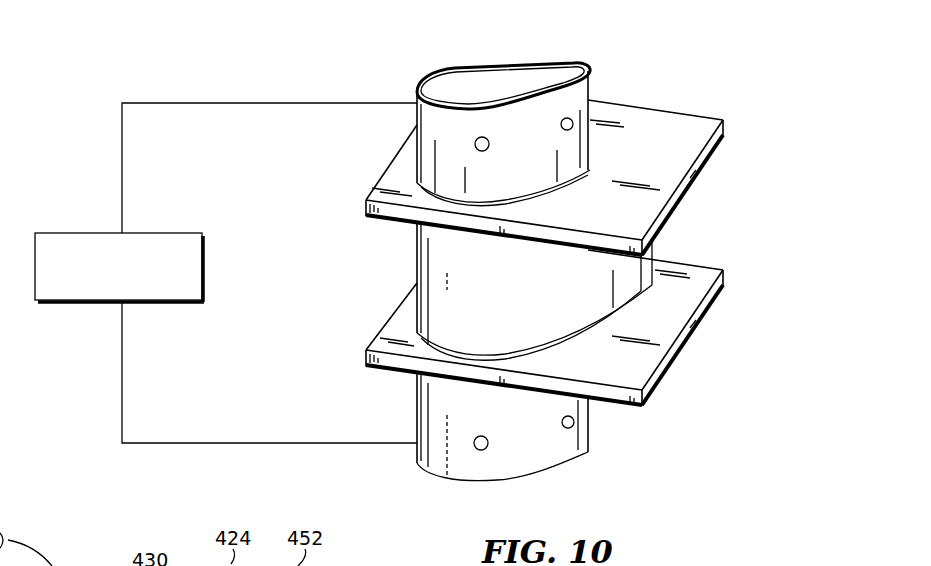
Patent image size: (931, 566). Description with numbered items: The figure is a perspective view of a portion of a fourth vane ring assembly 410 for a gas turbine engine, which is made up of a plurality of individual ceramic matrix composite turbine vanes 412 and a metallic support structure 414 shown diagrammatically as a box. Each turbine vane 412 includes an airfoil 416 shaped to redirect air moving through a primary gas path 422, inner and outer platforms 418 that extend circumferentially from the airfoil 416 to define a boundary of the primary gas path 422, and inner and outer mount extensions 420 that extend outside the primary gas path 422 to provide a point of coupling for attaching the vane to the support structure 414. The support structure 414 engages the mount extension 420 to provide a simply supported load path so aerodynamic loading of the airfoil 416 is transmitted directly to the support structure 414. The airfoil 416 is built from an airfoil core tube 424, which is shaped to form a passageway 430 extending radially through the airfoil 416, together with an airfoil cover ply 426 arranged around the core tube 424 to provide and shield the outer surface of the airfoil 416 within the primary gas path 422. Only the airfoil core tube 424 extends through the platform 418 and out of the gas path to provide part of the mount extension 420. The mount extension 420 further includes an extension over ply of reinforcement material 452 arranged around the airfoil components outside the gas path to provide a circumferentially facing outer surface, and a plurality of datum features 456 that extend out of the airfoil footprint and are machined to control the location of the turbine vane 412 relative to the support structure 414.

The vane ring assembly 410 is at (752, 78).
The turbine vane 412 is at (755, 129).
The support structure 414 is at (75, 232).
The airfoil 416 is at (655, 252).
The inner and outer platforms 418 is at (715, 152).
The inner and outer mount extensions 420 is at (561, 266).
The primary gas path 422 is at (338, 301).
The airfoil core tube 424 is at (570, 66).
The airfoil cover ply 426 is at (585, 280).
The passageway 430 is at (497, 92).
The extension over ply of reinforcement material 452 is at (548, 156).
The datum features 456 is at (560, 125).